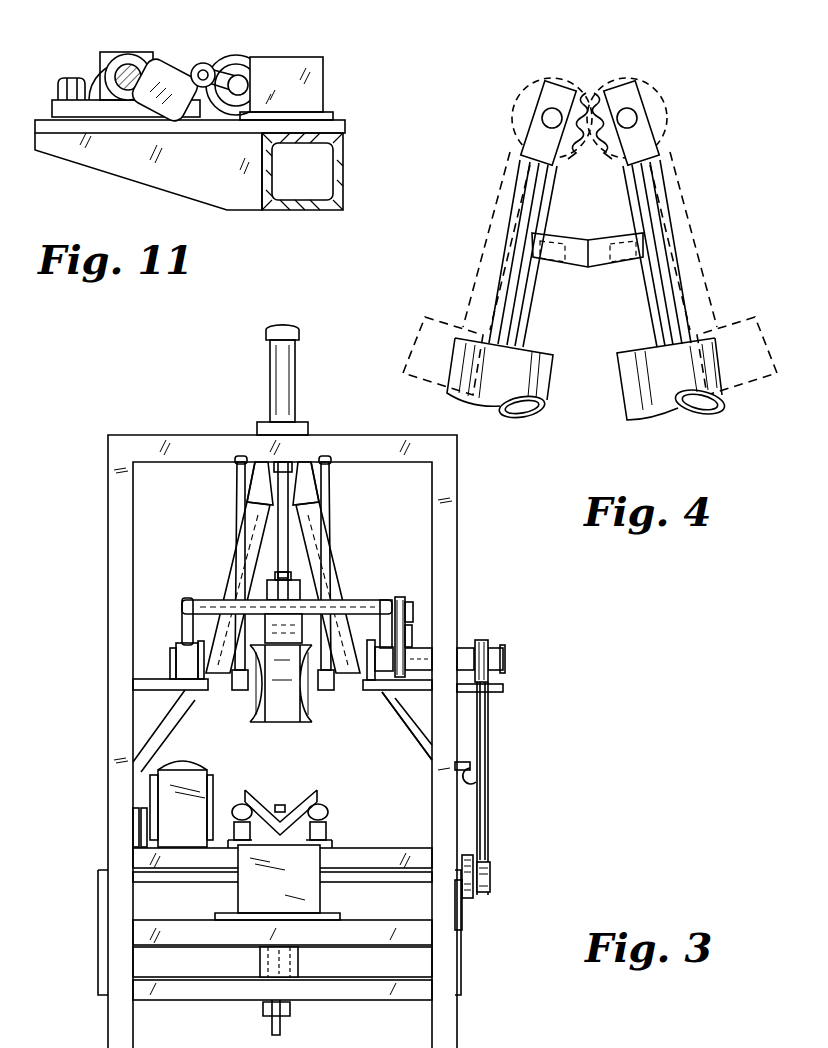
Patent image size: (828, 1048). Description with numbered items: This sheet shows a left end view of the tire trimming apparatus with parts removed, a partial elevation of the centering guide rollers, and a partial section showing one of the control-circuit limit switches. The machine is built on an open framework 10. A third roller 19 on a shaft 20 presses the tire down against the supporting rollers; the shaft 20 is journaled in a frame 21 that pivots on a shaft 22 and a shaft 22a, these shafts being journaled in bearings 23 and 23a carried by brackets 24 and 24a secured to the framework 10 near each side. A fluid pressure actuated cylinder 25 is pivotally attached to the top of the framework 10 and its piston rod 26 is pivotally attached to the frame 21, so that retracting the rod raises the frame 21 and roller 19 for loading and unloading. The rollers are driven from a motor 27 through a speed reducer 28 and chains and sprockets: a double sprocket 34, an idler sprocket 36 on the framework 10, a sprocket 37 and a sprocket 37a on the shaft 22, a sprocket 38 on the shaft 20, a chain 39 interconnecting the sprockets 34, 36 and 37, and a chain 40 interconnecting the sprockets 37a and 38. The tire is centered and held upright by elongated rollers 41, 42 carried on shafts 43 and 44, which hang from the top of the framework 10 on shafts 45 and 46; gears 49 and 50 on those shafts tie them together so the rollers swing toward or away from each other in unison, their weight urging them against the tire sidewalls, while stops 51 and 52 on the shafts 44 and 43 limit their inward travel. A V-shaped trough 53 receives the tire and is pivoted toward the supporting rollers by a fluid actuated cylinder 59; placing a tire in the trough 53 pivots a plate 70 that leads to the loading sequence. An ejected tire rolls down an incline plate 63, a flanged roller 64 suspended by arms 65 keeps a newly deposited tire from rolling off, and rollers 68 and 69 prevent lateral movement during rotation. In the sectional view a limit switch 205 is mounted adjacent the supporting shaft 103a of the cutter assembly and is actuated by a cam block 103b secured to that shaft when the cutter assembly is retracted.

In FIG. 11, the supporting shaft 103a is at (129, 68).
In FIG. 11, the cam block 103b is at (177, 78).
In FIG. 11, the limit switch 205 is at (288, 70).
In FIG. 3, the framework 10 is at (478, 504).
In FIG. 3, the third roller 19 is at (270, 590).
In FIG. 3, the shaft 20 is at (360, 604).
In FIG. 3, the frame 21 is at (372, 606).
In FIG. 3, the shaft 22 is at (398, 693).
In FIG. 3, the shaft 22a is at (175, 648).
In FIG. 3, the bearing 23 is at (370, 658).
In FIG. 3, the bearing 23a is at (178, 658).
In FIG. 3, the bracket 24 is at (392, 700).
In FIG. 3, the bracket 24a is at (192, 690).
In FIG. 3, the fluid pressure actuated cylinder 25 is at (297, 357).
In FIG. 3, the piston rod 26 is at (290, 490).
In FIG. 3, the motor 27 is at (180, 770).
In FIG. 3, the speed reducer 28 is at (196, 780).
In FIG. 3, the double sprocket 34 is at (478, 895).
In FIG. 3, the idler sprocket 36 is at (480, 778).
In FIG. 3, the sprocket 37 is at (482, 648).
In FIG. 3, the sprocket 37a is at (412, 646).
In FIG. 3, the sprocket 38 is at (413, 606).
In FIG. 3, the chain 39 is at (488, 723).
In FIG. 3, the chain 40 is at (402, 640).
In FIG. 4, the elongated roller 41 is at (657, 408).
In FIG. 3, the elongated roller 41 is at (233, 547).
In FIG. 4, the elongated roller 42 is at (543, 412).
In FIG. 3, the elongated roller 42 is at (333, 555).
In FIG. 4, the shaft 43 is at (668, 292).
In FIG. 3, the shaft 43 is at (260, 480).
In FIG. 4, the shaft 44 is at (505, 290).
In FIG. 3, the shaft 44 is at (305, 490).
In FIG. 4, the shaft 45 is at (634, 116).
In FIG. 4, the shaft 46 is at (546, 116).
In FIG. 4, the gear 49 is at (595, 92).
In FIG. 4, the gear 50 is at (585, 92).
In FIG. 4, the stop 51 is at (606, 262).
In FIG. 4, the stop 52 is at (573, 238).
In FIG. 3, the trough 53 is at (312, 795).
In FIG. 3, the fluid actuated cylinder 59 is at (296, 962).
In FIG. 3, the incline plate 63 is at (314, 882).
In FIG. 3, the flanged roller 64 is at (284, 712).
In FIG. 3, the arms 65 is at (246, 494).
In FIG. 3, the roller 68 is at (238, 805).
In FIG. 3, the roller 69 is at (330, 815).
In FIG. 3, the plate 70 is at (280, 805).